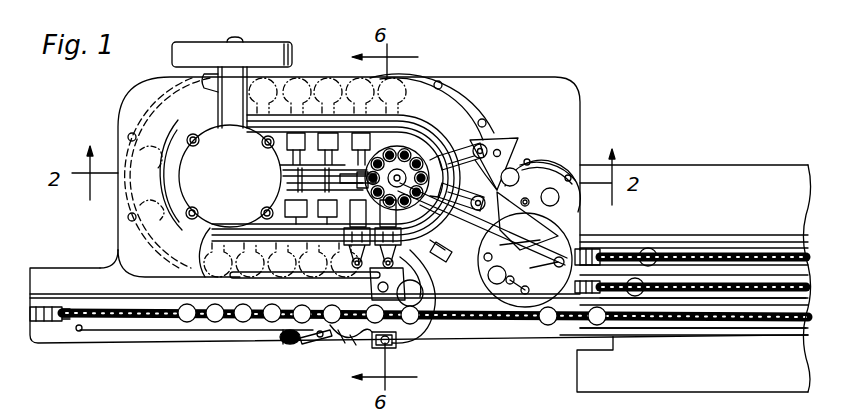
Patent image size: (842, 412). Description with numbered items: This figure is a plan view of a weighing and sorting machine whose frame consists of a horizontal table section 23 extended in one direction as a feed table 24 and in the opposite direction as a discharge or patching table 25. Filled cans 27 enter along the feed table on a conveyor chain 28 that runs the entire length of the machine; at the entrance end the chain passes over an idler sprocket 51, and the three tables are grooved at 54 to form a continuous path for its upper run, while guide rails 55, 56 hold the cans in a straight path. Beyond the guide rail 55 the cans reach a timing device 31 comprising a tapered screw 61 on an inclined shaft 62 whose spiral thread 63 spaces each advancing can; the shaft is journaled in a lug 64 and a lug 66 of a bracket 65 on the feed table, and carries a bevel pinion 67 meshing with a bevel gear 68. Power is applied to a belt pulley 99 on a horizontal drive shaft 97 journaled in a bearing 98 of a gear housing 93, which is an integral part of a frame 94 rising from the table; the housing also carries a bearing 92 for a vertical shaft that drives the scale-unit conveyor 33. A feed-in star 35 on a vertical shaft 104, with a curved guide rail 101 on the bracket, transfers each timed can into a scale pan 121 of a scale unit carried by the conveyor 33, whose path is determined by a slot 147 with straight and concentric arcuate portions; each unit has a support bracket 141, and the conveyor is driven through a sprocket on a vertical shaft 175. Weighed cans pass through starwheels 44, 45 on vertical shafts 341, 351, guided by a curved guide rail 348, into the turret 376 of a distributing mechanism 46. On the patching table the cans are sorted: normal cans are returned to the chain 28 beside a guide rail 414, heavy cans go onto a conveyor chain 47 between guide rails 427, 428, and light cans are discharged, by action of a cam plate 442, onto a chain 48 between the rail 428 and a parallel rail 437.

The table section 23 is at (530, 78).
The feed table 24 is at (172, 342).
The discharge or patching table 25 is at (757, 247).
The filled cans 27 is at (417, 246).
The conveyor chain 28 is at (117, 322).
The timing device 31 is at (330, 350).
The conveyor 33 is at (330, 90).
The feed-in star 35 is at (385, 275).
The starwheel 44 is at (508, 162).
The starwheel 45 is at (527, 194).
The distributing mechanism 46 is at (578, 224).
The conveyor chain 47 is at (773, 303).
The chain 48 is at (716, 253).
The idler sprocket 51 is at (48, 323).
The groove 54 is at (72, 321).
The guide rail 55 is at (148, 332).
The guide rail 56 is at (148, 301).
The tapered screw 61 is at (342, 346).
The shaft 62 is at (394, 347).
The spiral thread 63 is at (322, 343).
The lug 64 is at (375, 346).
The bracket 65 is at (353, 350).
The lug 66 is at (302, 343).
The bevel pinion 67 is at (284, 341).
The bevel gear 68 is at (270, 346).
The bearing 92 is at (440, 248).
The gear housing 93 is at (230, 176).
The frame 94 is at (167, 173).
The horizontal drive shaft 97 is at (237, 41).
The bearing 98 is at (224, 97).
The belt pulley 99 is at (194, 50).
The curved guide rail 101 is at (434, 272).
The vertical shaft 104 is at (402, 296).
The scale pan 121 is at (350, 258).
The support bracket 141 is at (437, 140).
The slot 147 is at (356, 118).
The vertical shaft 175 is at (397, 178).
The vertical shaft 341 is at (498, 150).
The curved guide rail 348 is at (545, 158).
The vertical shaft 351 is at (525, 208).
The turret 376 is at (507, 299).
The guide rail 414 is at (632, 338).
The guide rail 427 is at (676, 303).
The guide rail 428 is at (692, 293).
The parallel rail 437 is at (665, 242).
The cam plate 442 is at (527, 221).